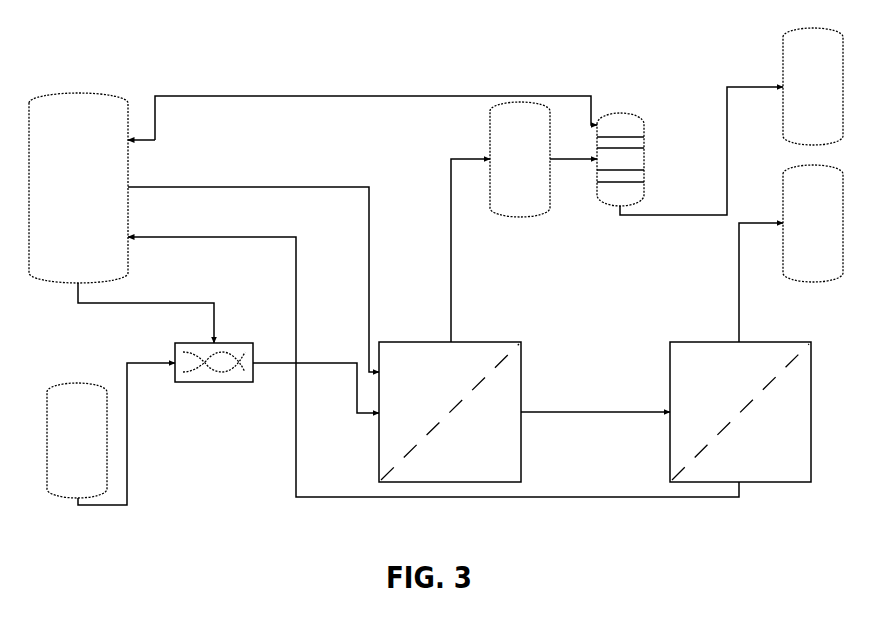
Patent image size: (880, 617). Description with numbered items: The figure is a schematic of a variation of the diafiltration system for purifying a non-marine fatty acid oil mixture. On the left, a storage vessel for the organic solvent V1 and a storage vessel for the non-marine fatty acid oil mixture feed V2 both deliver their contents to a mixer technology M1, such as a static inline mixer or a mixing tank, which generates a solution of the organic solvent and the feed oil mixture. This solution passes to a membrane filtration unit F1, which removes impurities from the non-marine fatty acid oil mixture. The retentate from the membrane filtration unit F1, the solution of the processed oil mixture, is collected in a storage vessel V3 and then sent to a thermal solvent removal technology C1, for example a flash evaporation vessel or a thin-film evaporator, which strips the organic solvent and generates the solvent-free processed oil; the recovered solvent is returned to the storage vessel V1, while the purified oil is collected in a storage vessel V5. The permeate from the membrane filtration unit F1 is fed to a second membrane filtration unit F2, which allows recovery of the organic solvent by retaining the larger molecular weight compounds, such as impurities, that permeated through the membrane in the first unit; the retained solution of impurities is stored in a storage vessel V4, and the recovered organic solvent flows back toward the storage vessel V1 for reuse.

The storage vessel for the organic solvent V1 is at (78, 188).
The storage vessel for the non-marine fatty acid oil mixture feed V2 is at (77, 440).
The storage vessel for the retentate solution V3 is at (520, 159).
The storage vessel for the permeate solution V4 is at (813, 223).
The storage vessel for the purified oil V5 is at (813, 86).
The thermal solvent removal technology C1 is at (620, 159).
The mixer technology M1 is at (214, 372).
The membrane filtration unit F1 is at (450, 412).
The membrane filtration unit for solvent recovery F2 is at (740, 412).